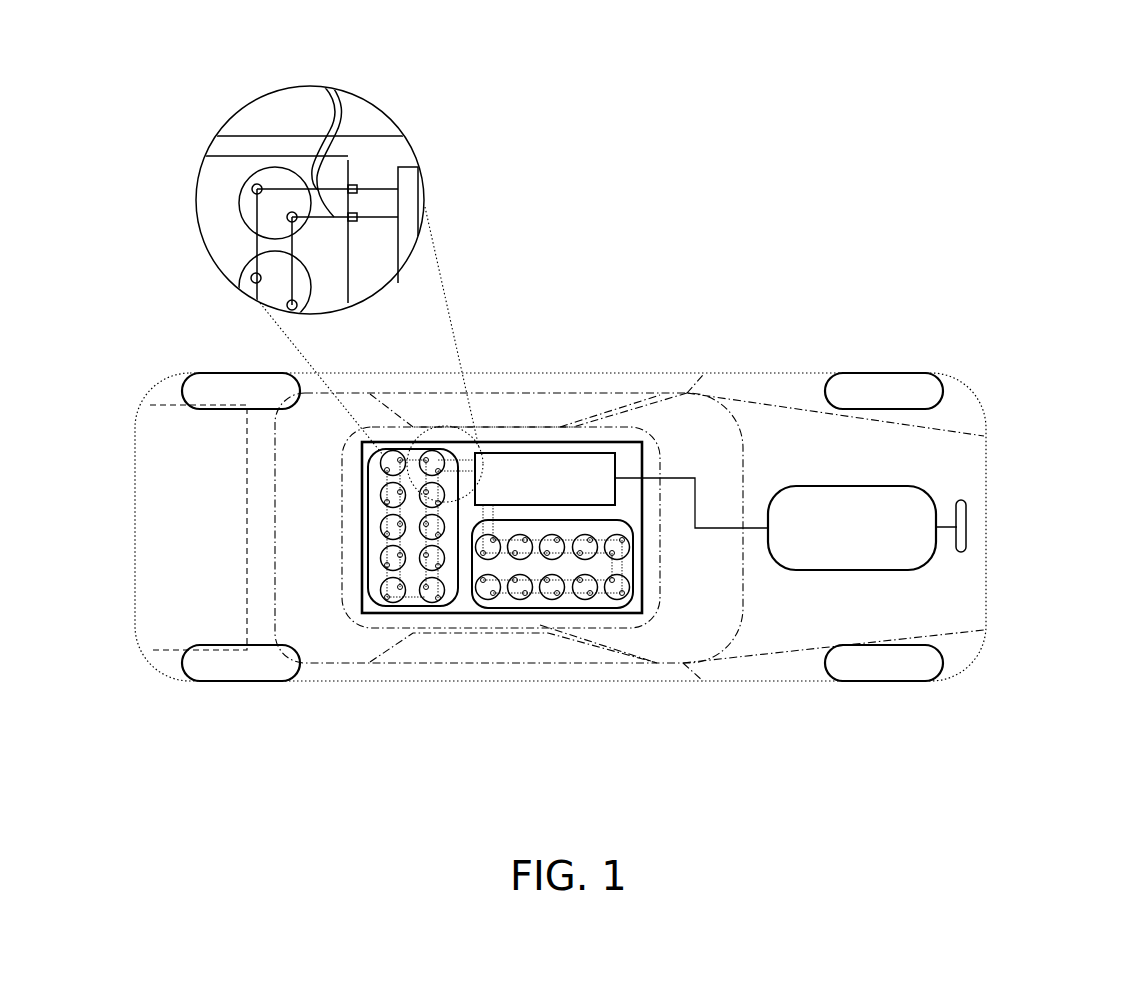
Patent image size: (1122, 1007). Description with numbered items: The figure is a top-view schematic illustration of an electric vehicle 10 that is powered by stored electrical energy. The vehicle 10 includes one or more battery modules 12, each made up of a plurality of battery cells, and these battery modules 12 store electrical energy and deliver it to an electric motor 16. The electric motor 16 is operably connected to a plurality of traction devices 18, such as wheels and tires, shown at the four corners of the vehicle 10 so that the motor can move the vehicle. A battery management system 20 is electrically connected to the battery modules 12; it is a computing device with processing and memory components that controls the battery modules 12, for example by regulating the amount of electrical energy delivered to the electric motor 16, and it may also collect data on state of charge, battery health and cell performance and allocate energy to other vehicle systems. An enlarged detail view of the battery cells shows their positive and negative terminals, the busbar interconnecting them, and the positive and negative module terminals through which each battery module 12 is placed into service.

The vehicle 10 is at (782, 291).
The battery module 12 is at (432, 612).
The electric motor 16 is at (936, 497).
The traction device 18 is at (240, 391).
The battery management system 20 is at (568, 473).